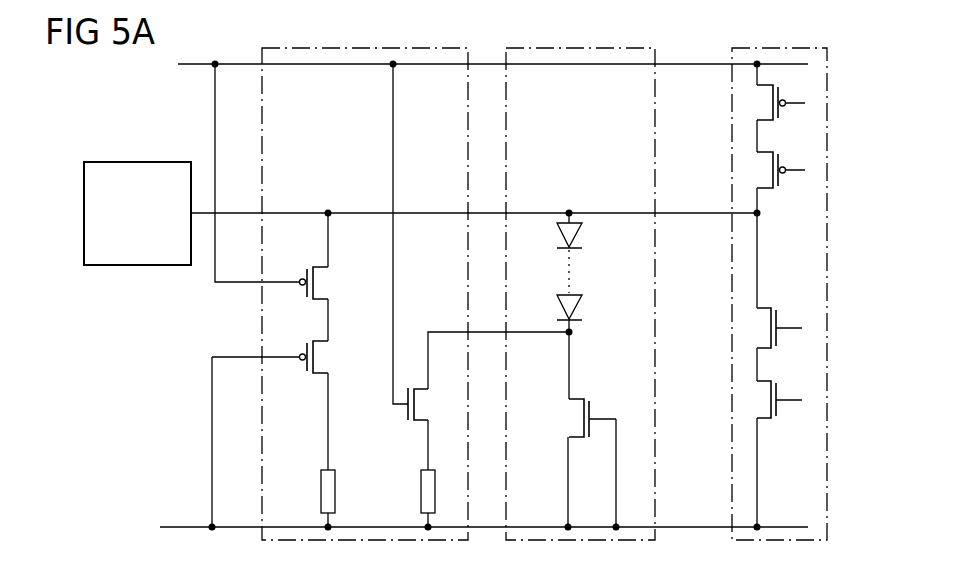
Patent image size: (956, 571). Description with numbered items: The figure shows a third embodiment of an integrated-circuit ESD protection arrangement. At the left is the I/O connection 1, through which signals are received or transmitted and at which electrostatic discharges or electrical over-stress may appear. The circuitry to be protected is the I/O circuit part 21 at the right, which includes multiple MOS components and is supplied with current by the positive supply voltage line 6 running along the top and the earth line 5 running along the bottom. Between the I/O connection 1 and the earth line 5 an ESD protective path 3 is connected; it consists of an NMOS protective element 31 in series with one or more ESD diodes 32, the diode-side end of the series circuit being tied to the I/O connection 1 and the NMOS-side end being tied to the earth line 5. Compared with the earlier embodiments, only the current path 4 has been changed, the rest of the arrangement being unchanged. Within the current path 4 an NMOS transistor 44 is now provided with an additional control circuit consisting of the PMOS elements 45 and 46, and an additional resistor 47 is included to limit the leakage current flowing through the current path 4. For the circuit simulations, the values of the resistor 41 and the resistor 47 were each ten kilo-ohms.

The I/O connection 1 is at (137, 162).
The ESD protective path 3 is at (660, 118).
The current path 4 is at (258, 325).
The earth line 5 is at (681, 526).
The positive supply voltage line 6 is at (690, 63).
The I/O circuit part 21 is at (829, 290).
The NMOS protective element 31 is at (580, 420).
The ESD diodes 32 is at (584, 232).
The resistor 41 is at (419, 491).
The NMOS transistor 44 is at (406, 414).
The PMOS element 45 is at (320, 286).
The PMOS element 46 is at (320, 361).
The resistor 47 is at (319, 491).